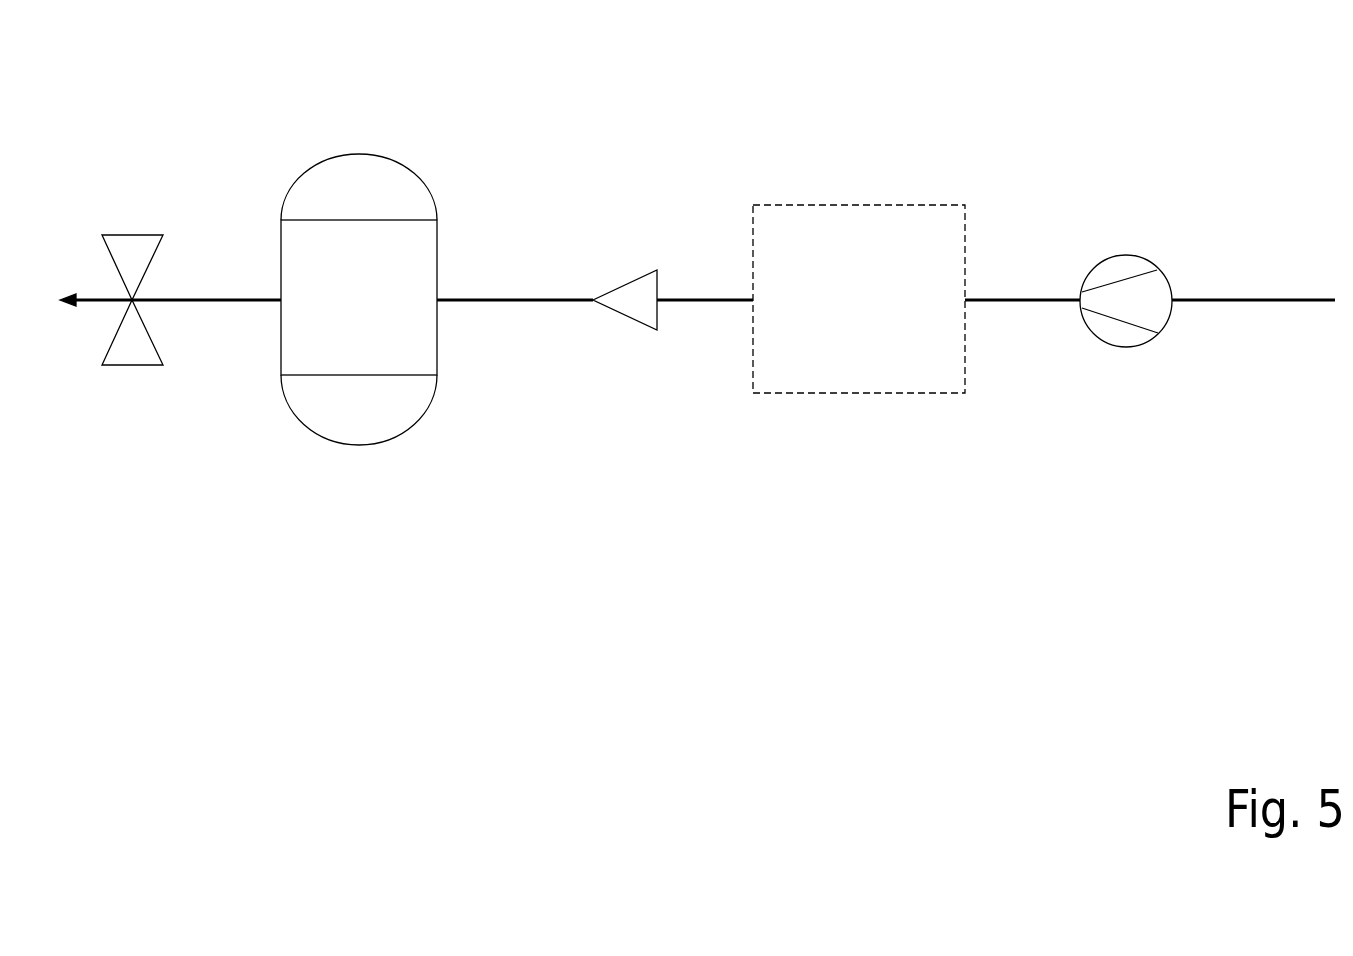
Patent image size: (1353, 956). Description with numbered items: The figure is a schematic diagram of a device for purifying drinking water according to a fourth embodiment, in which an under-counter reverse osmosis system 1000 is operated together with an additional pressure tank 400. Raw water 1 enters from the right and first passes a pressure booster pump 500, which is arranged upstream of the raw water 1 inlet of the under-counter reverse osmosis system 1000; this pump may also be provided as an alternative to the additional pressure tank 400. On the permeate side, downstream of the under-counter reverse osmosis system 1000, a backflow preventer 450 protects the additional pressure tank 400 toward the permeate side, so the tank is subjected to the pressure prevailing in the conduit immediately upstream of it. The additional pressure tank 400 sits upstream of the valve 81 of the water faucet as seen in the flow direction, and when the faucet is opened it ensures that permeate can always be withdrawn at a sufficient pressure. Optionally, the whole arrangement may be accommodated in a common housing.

The raw water 1 is at (1293, 293).
The valve of the water faucet 81 is at (133, 233).
The additional pressure tank 400 is at (385, 153).
The backflow preventer 450 is at (623, 282).
The pressure booster pump 500 is at (1126, 256).
The under-counter reverse osmosis system 1000 is at (847, 205).